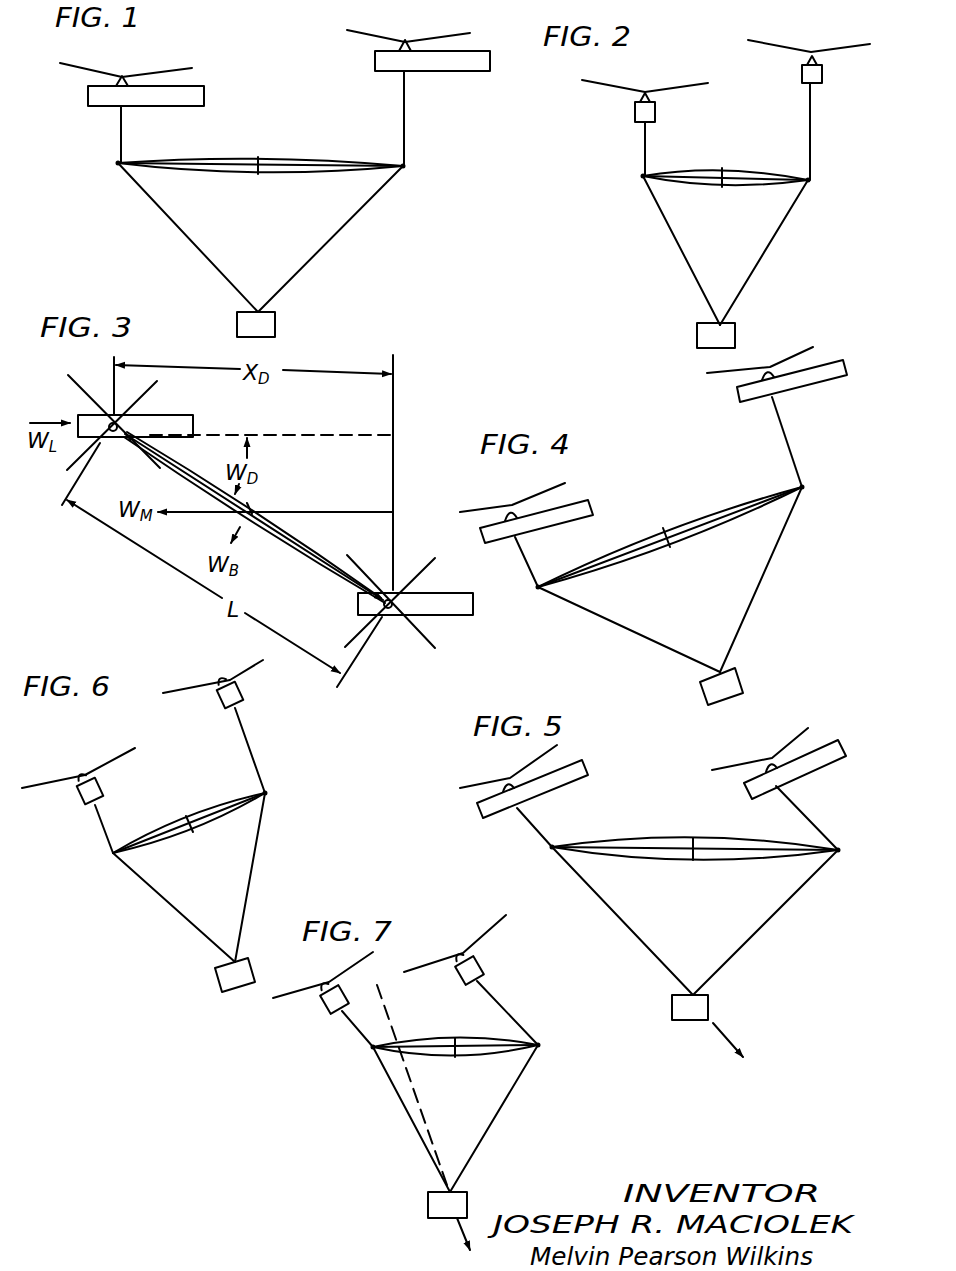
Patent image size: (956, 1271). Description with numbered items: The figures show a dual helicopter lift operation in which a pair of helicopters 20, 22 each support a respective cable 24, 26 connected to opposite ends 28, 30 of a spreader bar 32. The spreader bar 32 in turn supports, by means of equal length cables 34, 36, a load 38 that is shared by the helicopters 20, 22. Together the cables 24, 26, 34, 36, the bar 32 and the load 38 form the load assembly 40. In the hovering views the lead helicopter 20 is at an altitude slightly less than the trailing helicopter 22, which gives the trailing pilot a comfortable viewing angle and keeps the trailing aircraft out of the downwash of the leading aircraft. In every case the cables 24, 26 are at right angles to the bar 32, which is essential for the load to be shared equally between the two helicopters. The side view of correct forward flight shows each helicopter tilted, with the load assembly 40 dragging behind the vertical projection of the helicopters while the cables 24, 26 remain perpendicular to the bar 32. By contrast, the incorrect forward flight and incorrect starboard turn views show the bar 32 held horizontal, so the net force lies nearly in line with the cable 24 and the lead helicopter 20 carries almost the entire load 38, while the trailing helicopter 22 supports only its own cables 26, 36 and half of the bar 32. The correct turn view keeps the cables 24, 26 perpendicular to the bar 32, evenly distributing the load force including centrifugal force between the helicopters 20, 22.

In FIG. 1, the lead helicopter 20 is at (183, 105).
In FIG. 2, the lead helicopter 20 is at (635, 112).
In FIG. 3, the lead helicopter 20 is at (172, 418).
In FIG. 4, the lead helicopter 20 is at (593, 502).
In FIG. 6, the lead helicopter 20 is at (103, 787).
In FIG. 5, the lead helicopter 20 is at (607, 750).
In FIG. 7, the lead helicopter 20 is at (320, 1010).
In FIG. 1, the trailing helicopter 22 is at (463, 73).
In FIG. 2, the trailing helicopter 22 is at (800, 85).
In FIG. 3, the trailing helicopter 22 is at (358, 602).
In FIG. 4, the trailing helicopter 22 is at (820, 380).
In FIG. 6, the trailing helicopter 22 is at (242, 693).
In FIG. 5, the trailing helicopter 22 is at (835, 738).
In FIG. 7, the trailing helicopter 22 is at (488, 960).
In FIG. 1, the cable 24 is at (118, 138).
In FIG. 2, the cable 24 is at (645, 152).
In FIG. 4, the cable 24 is at (525, 563).
In FIG. 6, the cable 24 is at (97, 828).
In FIG. 5, the cable 24 is at (532, 832).
In FIG. 7, the cable 24 is at (355, 1032).
In FIG. 1, the cable 26 is at (406, 136).
In FIG. 2, the cable 26 is at (812, 125).
In FIG. 4, the cable 26 is at (790, 442).
In FIG. 6, the cable 26 is at (250, 742).
In FIG. 5, the cable 26 is at (803, 813).
In FIG. 7, the cable 26 is at (512, 1008).
In FIG. 1, the end of spreader bar 28 is at (118, 163).
In FIG. 2, the end of spreader bar 28 is at (640, 177).
In FIG. 4, the end of spreader bar 28 is at (536, 589).
In FIG. 5, the end of spreader bar 28 is at (547, 850).
In FIG. 7, the end of spreader bar 28 is at (372, 1048).
In FIG. 1, the end of spreader bar 30 is at (405, 165).
In FIG. 2, the end of spreader bar 30 is at (810, 180).
In FIG. 4, the end of spreader bar 30 is at (803, 488).
In FIG. 6, the end of spreader bar 30 is at (267, 793).
In FIG. 5, the end of spreader bar 30 is at (838, 857).
In FIG. 7, the end of spreader bar 30 is at (542, 1047).
In FIG. 1, the spreader bar 32 is at (300, 143).
In FIG. 2, the spreader bar 32 is at (704, 172).
In FIG. 3, the spreader bar 32 is at (263, 508).
In FIG. 4, the spreader bar 32 is at (680, 527).
In FIG. 6, the spreader bar 32 is at (210, 800).
In FIG. 5, the spreader bar 32 is at (643, 840).
In FIG. 7, the spreader bar 32 is at (405, 1118).
In FIG. 1, the cable 34 is at (178, 226).
In FIG. 2, the cable 34 is at (672, 240).
In FIG. 4, the cable 34 is at (627, 625).
In FIG. 6, the cable 34 is at (180, 885).
In FIG. 5, the cable 34 is at (635, 930).
In FIG. 7, the cable 34 is at (411, 1088).
In FIG. 1, the cable 36 is at (354, 220).
In FIG. 2, the cable 36 is at (778, 232).
In FIG. 4, the cable 36 is at (775, 551).
In FIG. 6, the cable 36 is at (252, 857).
In FIG. 5, the cable 36 is at (753, 933).
In FIG. 7, the cable 36 is at (518, 1083).
In FIG. 1, the load 38 is at (237, 318).
In FIG. 2, the load 38 is at (697, 330).
In FIG. 4, the load 38 is at (737, 678).
In FIG. 6, the load 38 is at (217, 975).
In FIG. 5, the load 38 is at (713, 1007).
In FIG. 7, the load 38 is at (428, 1210).
In FIG. 1, the load assembly 40 is at (175, 242).
In FIG. 2, the load assembly 40 is at (675, 257).
In FIG. 4, the load assembly 40 is at (598, 622).
In FIG. 6, the load assembly 40 is at (147, 890).
In FIG. 5, the load assembly 40 is at (612, 918).
In FIG. 7, the load assembly 40 is at (417, 1143).